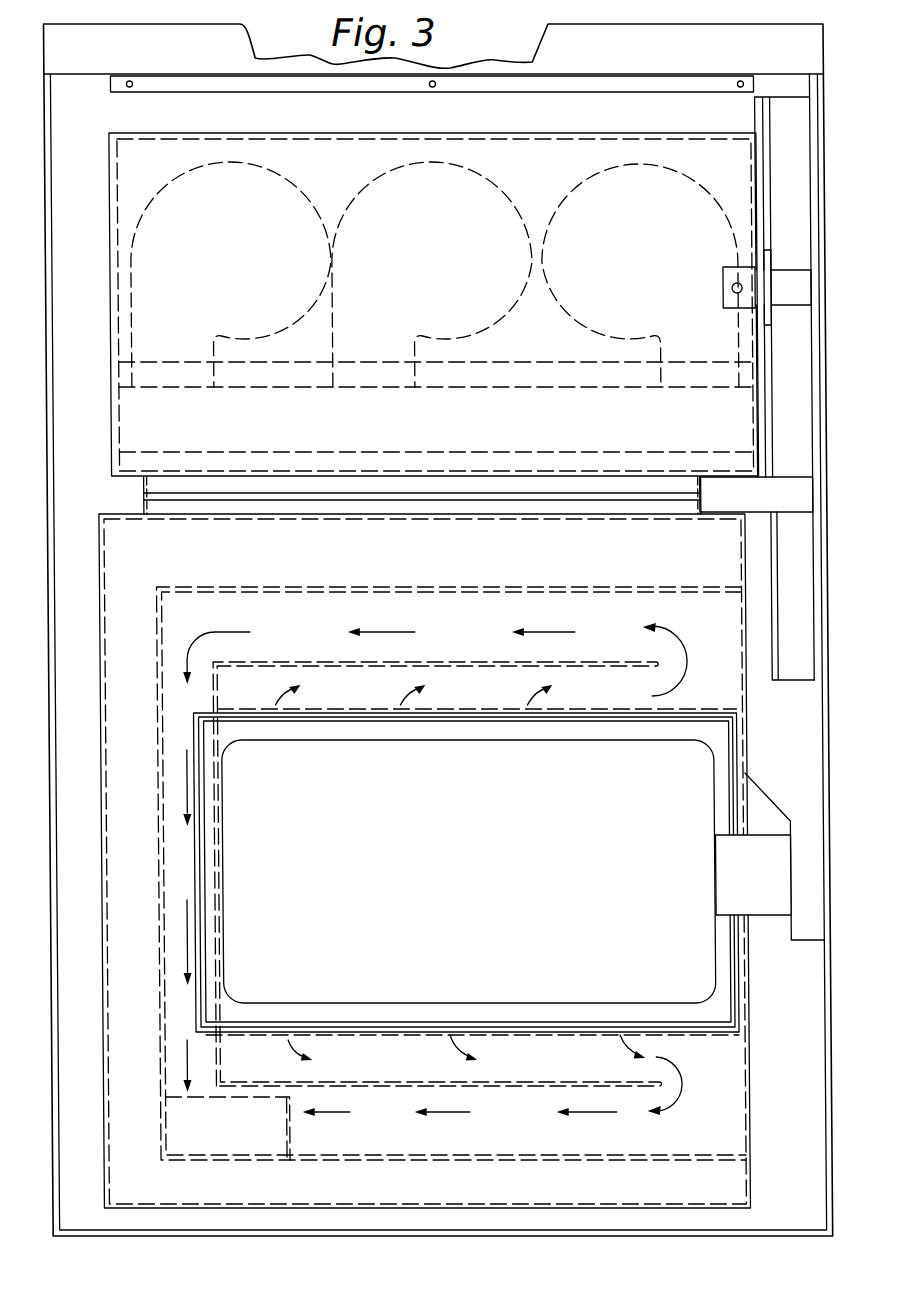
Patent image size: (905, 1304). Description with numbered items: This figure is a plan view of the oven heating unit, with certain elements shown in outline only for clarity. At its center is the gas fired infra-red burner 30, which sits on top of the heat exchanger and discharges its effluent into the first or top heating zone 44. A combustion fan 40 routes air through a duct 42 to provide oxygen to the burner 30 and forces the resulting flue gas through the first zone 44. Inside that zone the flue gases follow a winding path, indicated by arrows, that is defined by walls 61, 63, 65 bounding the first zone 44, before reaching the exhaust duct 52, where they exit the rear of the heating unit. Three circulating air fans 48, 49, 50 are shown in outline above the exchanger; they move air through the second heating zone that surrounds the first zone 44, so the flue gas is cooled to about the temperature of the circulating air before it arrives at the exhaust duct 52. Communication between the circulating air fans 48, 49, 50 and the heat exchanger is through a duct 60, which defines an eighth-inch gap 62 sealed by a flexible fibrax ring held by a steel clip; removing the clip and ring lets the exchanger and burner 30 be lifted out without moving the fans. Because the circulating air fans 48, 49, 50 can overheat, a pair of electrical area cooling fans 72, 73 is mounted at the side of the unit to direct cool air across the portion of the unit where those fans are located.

The burner 30 is at (492, 874).
The combustion fan 40 is at (805, 611).
The duct 42 is at (800, 774).
The first enclosure or heating zone 44 is at (481, 646).
The circulating air fan 48 is at (299, 176).
The circulating air fan 49 is at (499, 182).
The circulating air fan 50 is at (664, 160).
The exhaust duct 52 is at (281, 1135).
The duct 60 is at (701, 490).
The wall 61 is at (340, 666).
The gap 62 is at (134, 496).
The wall 63 is at (430, 587).
The wall 65 is at (158, 663).
The area cooling fan 72 is at (807, 181).
The area cooling fan 73 is at (807, 364).